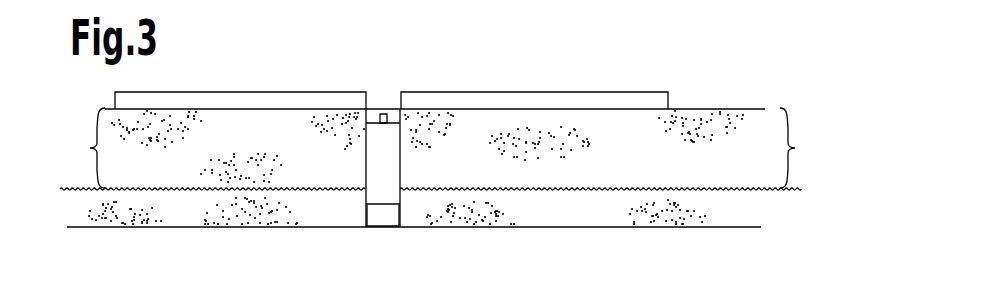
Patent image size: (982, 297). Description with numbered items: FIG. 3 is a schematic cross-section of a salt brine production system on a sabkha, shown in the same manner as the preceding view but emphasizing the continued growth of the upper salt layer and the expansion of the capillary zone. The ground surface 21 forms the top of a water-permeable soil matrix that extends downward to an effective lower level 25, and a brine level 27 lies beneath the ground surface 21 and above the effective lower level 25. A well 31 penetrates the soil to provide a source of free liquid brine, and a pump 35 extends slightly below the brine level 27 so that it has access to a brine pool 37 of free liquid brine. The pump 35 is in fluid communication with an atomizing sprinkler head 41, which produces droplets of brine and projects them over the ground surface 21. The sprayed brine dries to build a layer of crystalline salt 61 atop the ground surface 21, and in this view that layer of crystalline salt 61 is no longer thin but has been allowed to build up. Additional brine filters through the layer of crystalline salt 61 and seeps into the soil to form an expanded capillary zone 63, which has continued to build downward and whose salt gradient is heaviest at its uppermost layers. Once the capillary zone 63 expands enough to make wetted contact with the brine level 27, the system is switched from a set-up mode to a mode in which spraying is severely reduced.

The ground surface 21 is at (726, 109).
The effective lower level 25 is at (745, 227).
The brine level 27 is at (711, 189).
The well 31 is at (368, 215).
The pump 35 is at (384, 163).
The brine pool 37 is at (388, 218).
The atomizing sprinkler head 41 is at (386, 114).
The layer of crystalline salt 61 is at (250, 92).
The capillary zone 63 is at (442, 148).